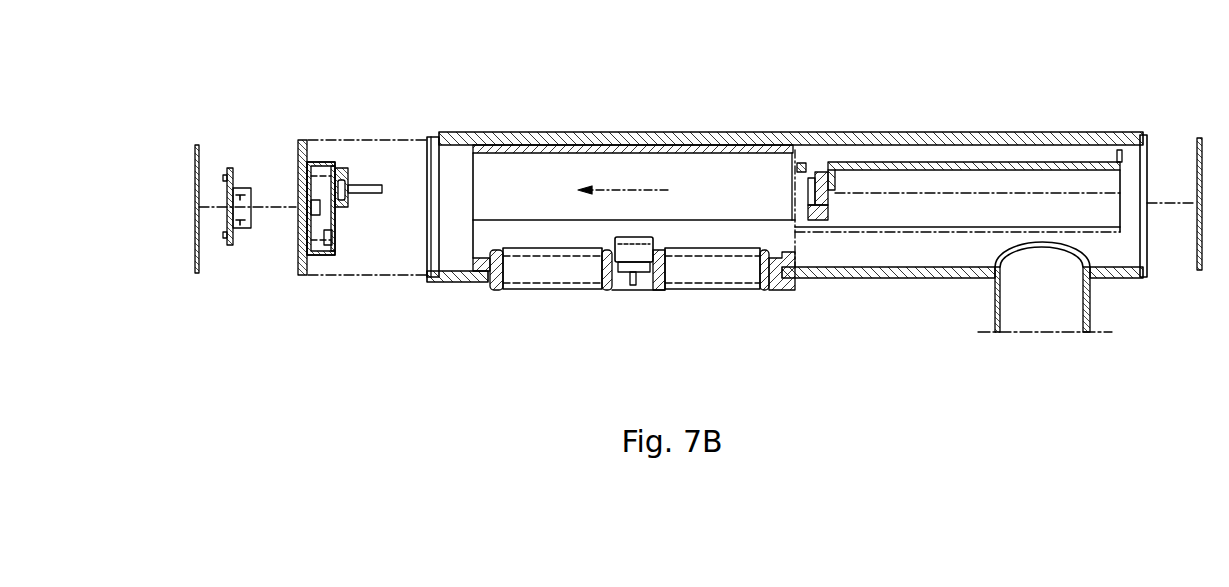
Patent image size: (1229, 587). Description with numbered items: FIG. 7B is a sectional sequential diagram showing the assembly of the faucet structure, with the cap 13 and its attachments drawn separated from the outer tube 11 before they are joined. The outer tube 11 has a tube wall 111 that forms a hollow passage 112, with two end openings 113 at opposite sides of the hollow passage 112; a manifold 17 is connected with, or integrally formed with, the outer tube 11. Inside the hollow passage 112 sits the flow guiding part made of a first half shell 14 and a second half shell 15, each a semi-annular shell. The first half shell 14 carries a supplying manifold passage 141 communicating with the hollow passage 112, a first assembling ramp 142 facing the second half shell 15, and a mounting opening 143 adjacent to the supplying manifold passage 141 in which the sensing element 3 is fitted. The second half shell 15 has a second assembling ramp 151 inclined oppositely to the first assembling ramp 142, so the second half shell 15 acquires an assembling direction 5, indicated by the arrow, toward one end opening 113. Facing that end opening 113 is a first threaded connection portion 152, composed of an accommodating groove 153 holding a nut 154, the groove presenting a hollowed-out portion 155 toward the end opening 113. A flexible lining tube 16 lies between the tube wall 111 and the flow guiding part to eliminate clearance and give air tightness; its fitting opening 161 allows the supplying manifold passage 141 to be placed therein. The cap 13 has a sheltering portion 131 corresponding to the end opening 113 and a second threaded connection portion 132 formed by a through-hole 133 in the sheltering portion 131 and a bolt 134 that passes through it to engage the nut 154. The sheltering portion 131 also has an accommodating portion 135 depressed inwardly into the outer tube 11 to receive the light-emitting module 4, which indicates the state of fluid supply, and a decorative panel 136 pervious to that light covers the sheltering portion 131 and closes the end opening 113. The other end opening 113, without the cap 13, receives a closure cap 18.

The sensing element 3 is at (633, 292).
The light-emitting module 4 is at (243, 195).
The assembling direction 5 is at (625, 187).
The outer tube 11 is at (786, 195).
The cap 13 is at (335, 187).
The first half shell 14 is at (576, 241).
The second half shell 15 is at (958, 160).
The flexible lining tube 16 is at (665, 146).
The manifold 17 is at (1090, 310).
The closure cap 18 is at (1199, 138).
The tube wall 111 is at (1083, 137).
The hollow passage 112 is at (921, 252).
The end openings 113 is at (431, 282).
The sheltering portion 131 is at (303, 255).
The second threaded connection portion 132 is at (363, 144).
The through-hole 133 is at (345, 170).
The bolt 134 is at (380, 186).
The accommodating portion 135 is at (325, 245).
The decorative panel 136 is at (199, 157).
The supplying manifold passage 141 is at (703, 281).
The first assembling ramp 142 is at (740, 226).
The mounting opening 143 is at (620, 274).
The second assembling ramp 151 is at (1060, 230).
The first threaded connection portion 152 is at (788, 137).
The accommodating groove 153 is at (826, 171).
The nut 154 is at (801, 161).
The hollowed-out portion 155 is at (806, 181).
The fitting opening 161 is at (497, 287).